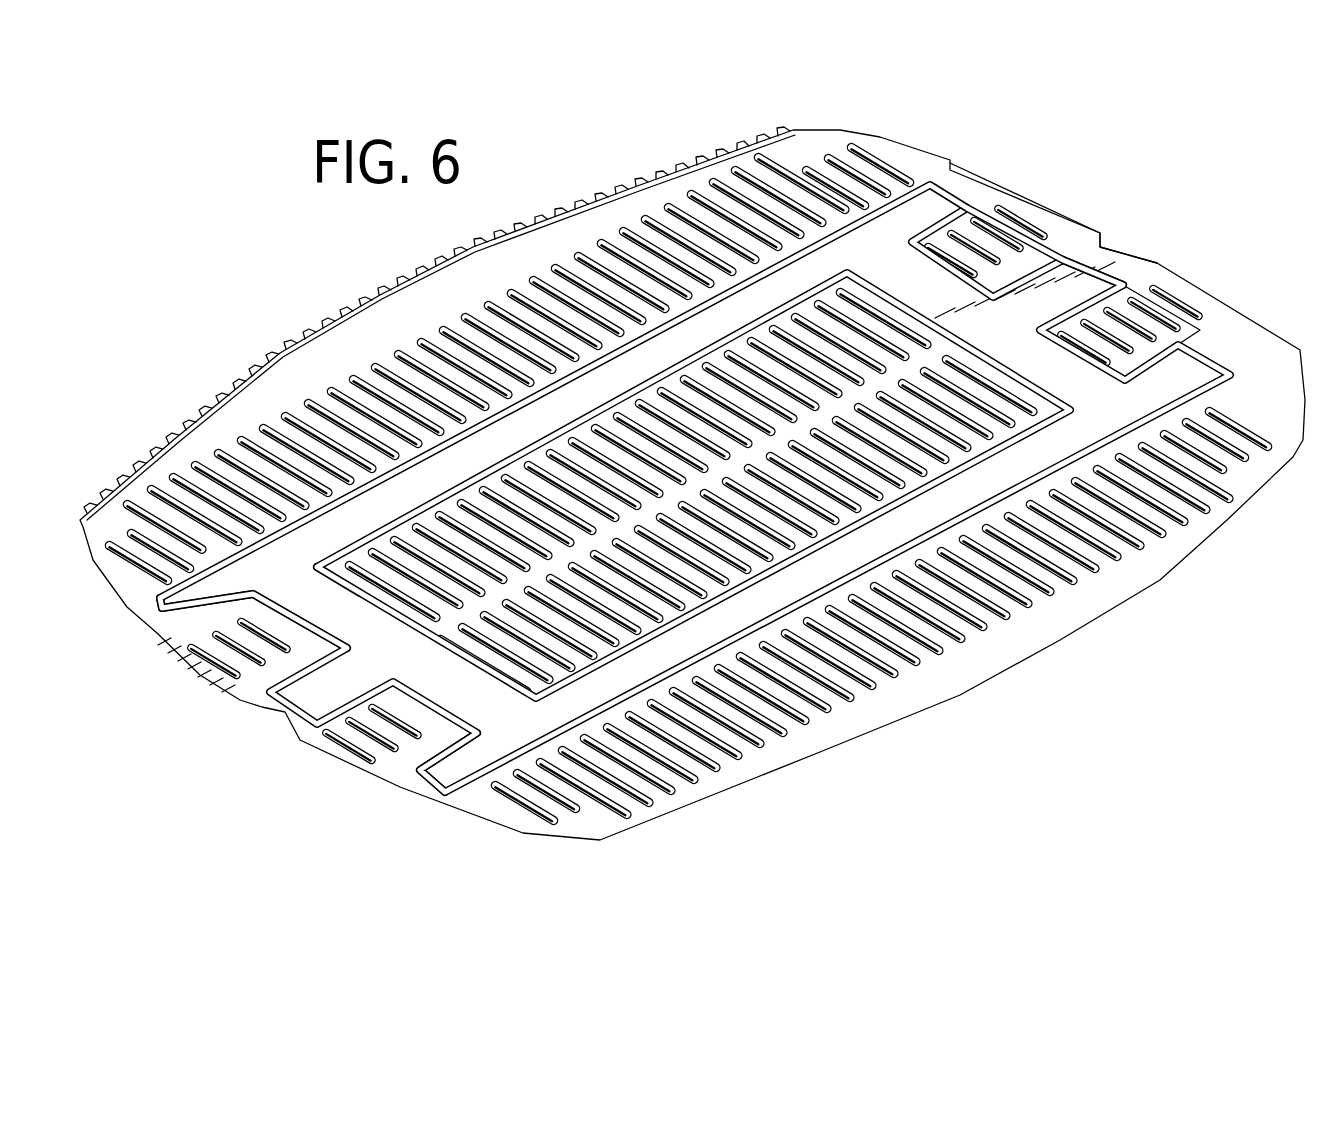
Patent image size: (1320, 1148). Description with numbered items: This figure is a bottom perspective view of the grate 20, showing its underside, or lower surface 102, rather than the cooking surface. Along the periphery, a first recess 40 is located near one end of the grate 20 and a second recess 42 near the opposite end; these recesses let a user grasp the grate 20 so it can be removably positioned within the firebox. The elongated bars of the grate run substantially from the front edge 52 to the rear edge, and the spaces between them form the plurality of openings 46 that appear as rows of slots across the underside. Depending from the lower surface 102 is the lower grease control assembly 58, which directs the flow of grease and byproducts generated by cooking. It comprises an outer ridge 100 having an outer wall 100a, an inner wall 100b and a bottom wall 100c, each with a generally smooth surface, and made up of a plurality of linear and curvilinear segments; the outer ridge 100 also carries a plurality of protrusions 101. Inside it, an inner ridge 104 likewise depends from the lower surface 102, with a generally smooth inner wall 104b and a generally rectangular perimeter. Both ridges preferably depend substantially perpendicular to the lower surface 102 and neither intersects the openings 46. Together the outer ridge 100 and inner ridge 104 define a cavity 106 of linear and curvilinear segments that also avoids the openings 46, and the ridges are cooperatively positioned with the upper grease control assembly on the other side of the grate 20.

The grate 20 is at (1133, 167).
The first recess 40 is at (280, 717).
The second recess 42 is at (1123, 247).
The openings 46 is at (694, 197).
The front edge 52 is at (480, 237).
The lower grease control assembly 58 is at (992, 200).
The outer ridge 100 is at (893, 232).
The outer wall 100a is at (327, 543).
The inner wall 100b is at (440, 784).
The bottom wall 100c is at (335, 592).
The protrusions 101 is at (1072, 258).
The lower surface 102 is at (1207, 327).
The inner ridge 104 is at (1000, 455).
The inner wall 104b is at (407, 613).
The cavity 106 is at (920, 193).